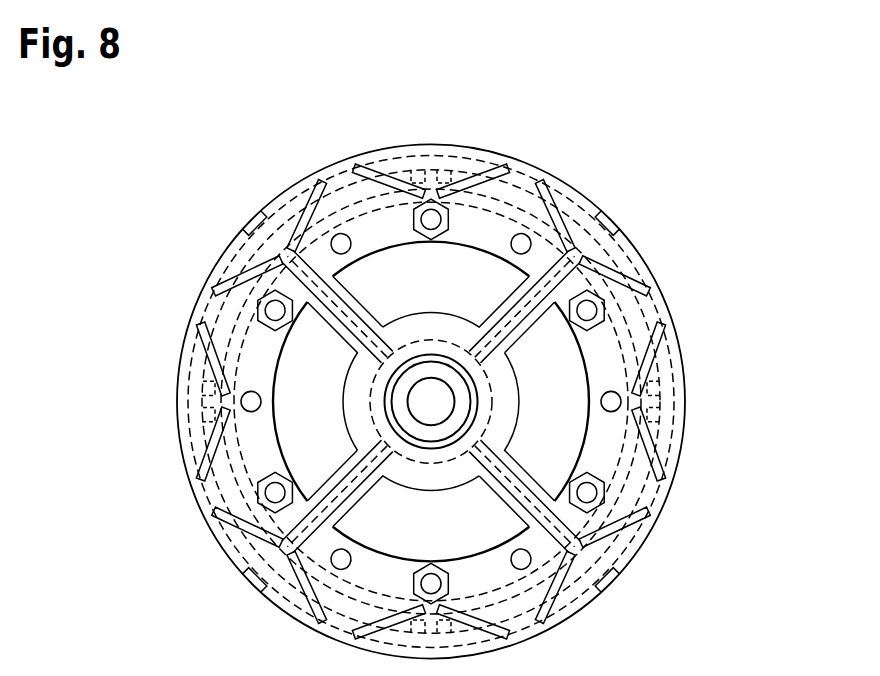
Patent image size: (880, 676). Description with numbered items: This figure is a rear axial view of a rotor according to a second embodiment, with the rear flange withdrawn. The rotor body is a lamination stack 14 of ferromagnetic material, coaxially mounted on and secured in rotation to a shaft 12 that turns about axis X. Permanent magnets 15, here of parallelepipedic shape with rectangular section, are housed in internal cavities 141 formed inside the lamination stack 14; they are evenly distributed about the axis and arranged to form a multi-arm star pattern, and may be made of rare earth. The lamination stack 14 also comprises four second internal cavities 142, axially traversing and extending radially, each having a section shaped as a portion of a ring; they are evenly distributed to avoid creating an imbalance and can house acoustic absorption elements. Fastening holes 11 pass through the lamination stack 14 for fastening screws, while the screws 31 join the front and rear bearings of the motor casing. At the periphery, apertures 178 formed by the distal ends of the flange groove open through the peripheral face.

The fastening holes 11 is at (621, 401).
The shaft 12 is at (429, 401).
The lamination stack 14 is at (372, 227).
The permanent magnets 15 is at (544, 187).
The fastening screws 31 is at (257, 489).
The internal cavities 141 is at (599, 261).
The second internal cavities 142 is at (372, 274).
The apertures 178 is at (614, 577).